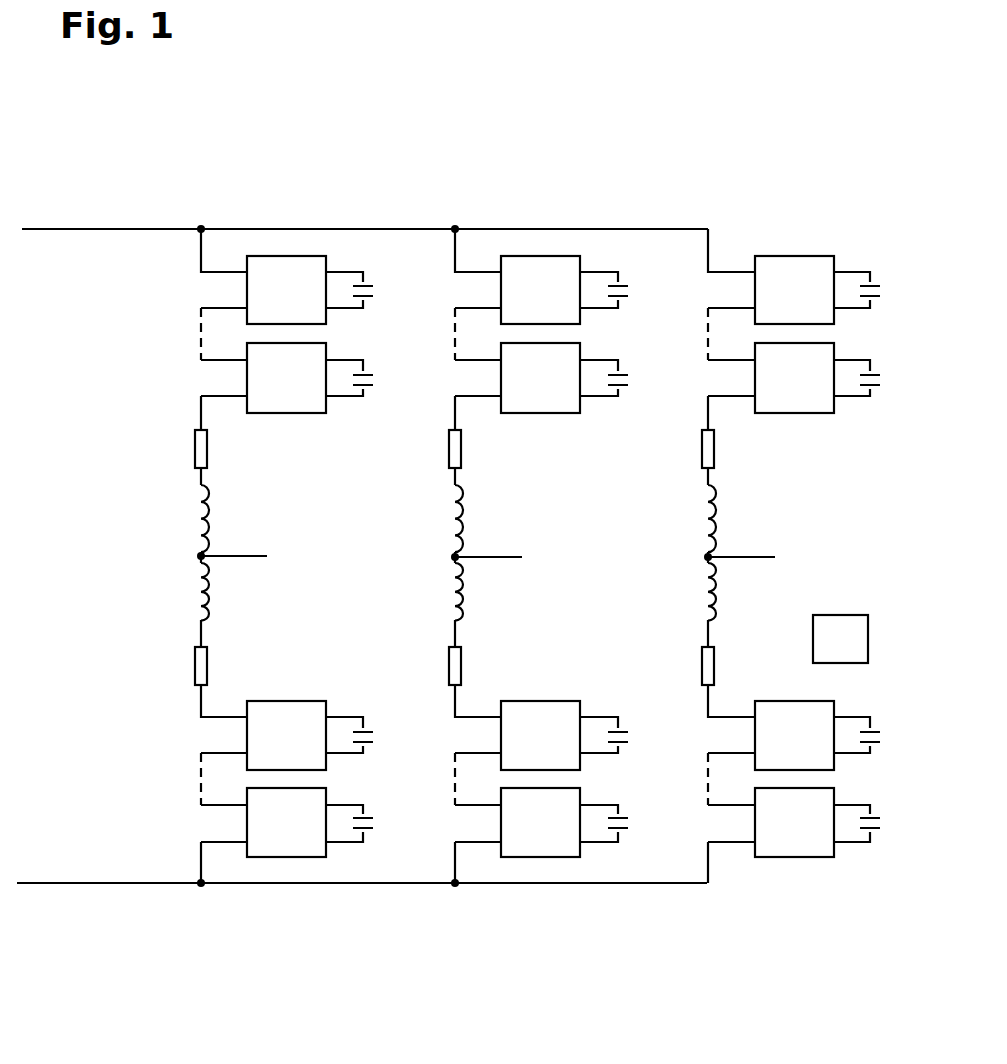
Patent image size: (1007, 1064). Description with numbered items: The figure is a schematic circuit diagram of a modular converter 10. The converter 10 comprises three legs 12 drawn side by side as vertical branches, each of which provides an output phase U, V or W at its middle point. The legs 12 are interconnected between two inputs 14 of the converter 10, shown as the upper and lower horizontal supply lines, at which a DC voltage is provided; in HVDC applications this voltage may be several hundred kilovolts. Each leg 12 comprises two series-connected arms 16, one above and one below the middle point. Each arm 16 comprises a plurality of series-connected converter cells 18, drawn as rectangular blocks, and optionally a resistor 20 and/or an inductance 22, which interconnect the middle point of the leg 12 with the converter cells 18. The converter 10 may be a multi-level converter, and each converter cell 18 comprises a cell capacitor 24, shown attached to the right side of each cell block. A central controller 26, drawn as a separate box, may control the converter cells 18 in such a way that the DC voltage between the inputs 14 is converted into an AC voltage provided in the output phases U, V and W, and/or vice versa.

The modular converter 10 is at (781, 76).
The leg 12 is at (289, 224).
The input 14 is at (40, 227).
The arm 16 is at (173, 296).
The converter cell 18 is at (346, 255).
The resistor 20 is at (173, 445).
The inductance 22 is at (173, 508).
The cell capacitor 24 is at (378, 273).
The central controller 26 is at (852, 615).